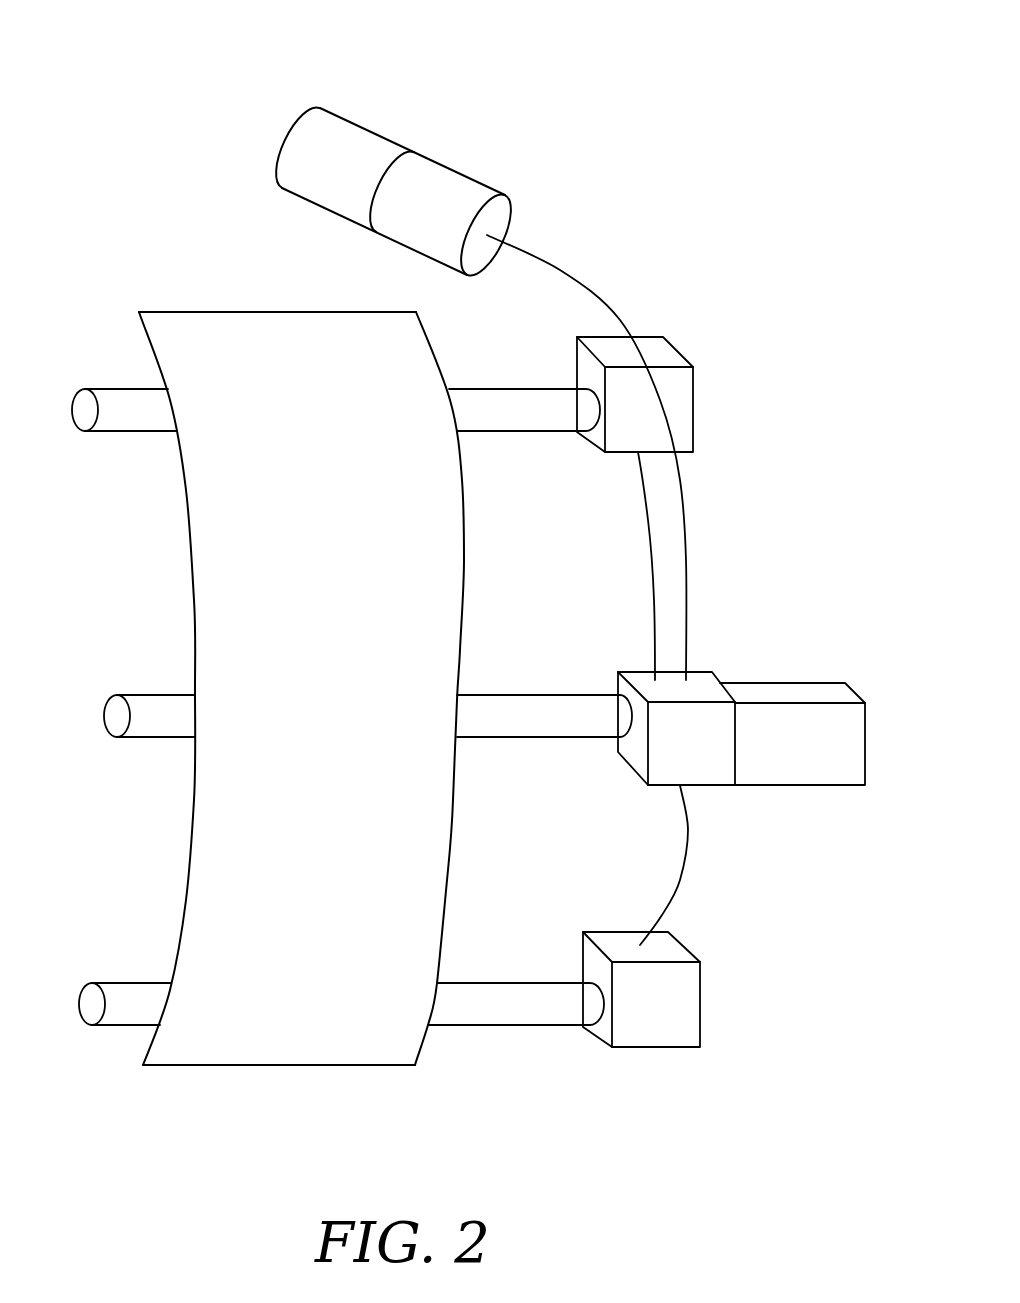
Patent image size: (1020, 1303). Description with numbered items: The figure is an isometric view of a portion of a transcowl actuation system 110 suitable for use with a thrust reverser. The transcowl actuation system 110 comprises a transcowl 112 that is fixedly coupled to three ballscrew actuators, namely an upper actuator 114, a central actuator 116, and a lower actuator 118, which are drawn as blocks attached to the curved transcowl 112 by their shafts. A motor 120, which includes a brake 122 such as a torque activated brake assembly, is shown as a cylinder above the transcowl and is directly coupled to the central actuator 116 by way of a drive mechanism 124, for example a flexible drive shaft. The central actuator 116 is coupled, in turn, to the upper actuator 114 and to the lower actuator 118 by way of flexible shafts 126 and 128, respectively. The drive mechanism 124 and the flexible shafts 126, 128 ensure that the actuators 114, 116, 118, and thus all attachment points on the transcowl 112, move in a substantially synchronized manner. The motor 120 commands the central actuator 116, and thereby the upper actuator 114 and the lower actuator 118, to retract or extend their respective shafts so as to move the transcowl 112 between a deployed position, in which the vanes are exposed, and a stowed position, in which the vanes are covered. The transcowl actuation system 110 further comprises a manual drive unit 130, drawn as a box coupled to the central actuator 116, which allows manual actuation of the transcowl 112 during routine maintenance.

The transcowl actuation system 110 is at (698, 61).
The transcowl 112 is at (190, 560).
The upper actuator 114 is at (695, 414).
The central actuator 116 is at (710, 678).
The lower actuator 118 is at (683, 1002).
The motor 120 is at (494, 213).
The brake 122 is at (302, 144).
The drive mechanism 124 is at (686, 563).
The flexible shaft 126 is at (655, 608).
The flexible shaft 128 is at (672, 862).
The manual drive unit 130 is at (817, 768).